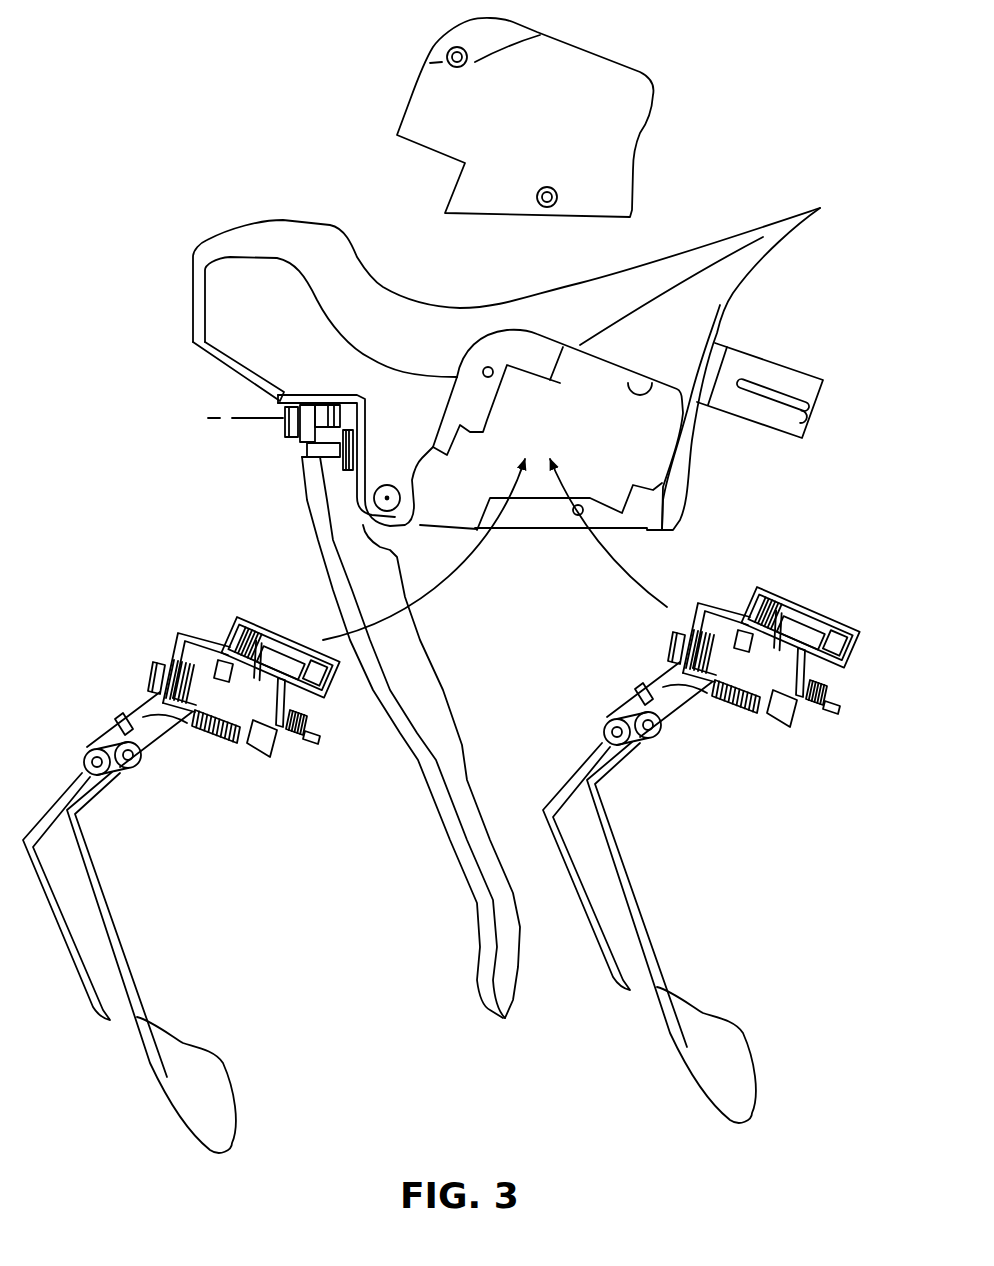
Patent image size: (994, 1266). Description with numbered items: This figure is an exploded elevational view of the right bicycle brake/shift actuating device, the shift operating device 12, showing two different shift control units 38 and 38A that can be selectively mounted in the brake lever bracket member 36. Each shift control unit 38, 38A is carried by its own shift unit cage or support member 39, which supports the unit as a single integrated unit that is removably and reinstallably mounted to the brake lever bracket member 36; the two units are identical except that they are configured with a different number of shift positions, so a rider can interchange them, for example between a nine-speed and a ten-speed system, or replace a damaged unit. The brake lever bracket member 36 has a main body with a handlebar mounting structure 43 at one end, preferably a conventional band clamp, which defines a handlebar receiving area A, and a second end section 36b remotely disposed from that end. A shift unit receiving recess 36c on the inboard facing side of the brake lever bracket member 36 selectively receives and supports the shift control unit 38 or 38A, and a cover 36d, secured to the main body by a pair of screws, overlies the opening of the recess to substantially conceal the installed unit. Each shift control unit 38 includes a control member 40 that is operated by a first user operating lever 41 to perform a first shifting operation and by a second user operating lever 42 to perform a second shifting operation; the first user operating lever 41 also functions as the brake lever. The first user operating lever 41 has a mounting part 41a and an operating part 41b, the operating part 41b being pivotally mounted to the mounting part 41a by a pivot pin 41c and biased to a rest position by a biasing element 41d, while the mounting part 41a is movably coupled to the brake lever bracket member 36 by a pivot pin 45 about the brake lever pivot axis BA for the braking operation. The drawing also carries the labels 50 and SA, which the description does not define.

The shift operating device 12 is at (195, 216).
The brake lever bracket member 36 is at (477, 302).
The second end section 36b is at (235, 332).
The shift unit receiving recess 36c is at (653, 381).
The cover 36d is at (600, 60).
The shift control unit 38 is at (717, 768).
The shift control unit 38A is at (197, 798).
The shift unit cage or support member 39 is at (265, 616).
The control member 40 is at (71, 979).
The first user operating lever 41 is at (446, 839).
The mounting part 41a is at (313, 412).
The operating part 41b is at (307, 498).
The pivot pin 41c is at (283, 429).
The biasing element 41d is at (354, 448).
The second user operating lever 42 is at (130, 973).
The handlebar mounting structure 43 is at (774, 352).
The pivot pin 45 is at (388, 484).
The mounting bolt 50 is at (150, 670).
The shift axis SA is at (180, 421).
The brake lever pivot axis BA is at (390, 498).
The handlebar receiving area A is at (743, 441).